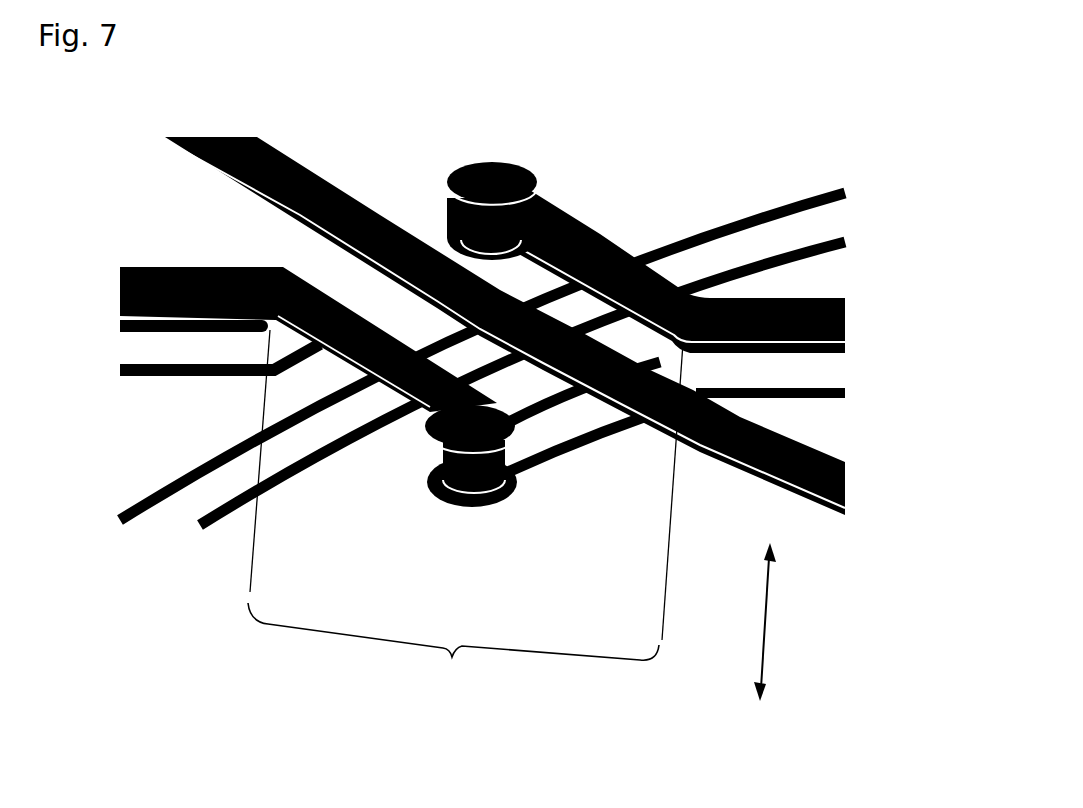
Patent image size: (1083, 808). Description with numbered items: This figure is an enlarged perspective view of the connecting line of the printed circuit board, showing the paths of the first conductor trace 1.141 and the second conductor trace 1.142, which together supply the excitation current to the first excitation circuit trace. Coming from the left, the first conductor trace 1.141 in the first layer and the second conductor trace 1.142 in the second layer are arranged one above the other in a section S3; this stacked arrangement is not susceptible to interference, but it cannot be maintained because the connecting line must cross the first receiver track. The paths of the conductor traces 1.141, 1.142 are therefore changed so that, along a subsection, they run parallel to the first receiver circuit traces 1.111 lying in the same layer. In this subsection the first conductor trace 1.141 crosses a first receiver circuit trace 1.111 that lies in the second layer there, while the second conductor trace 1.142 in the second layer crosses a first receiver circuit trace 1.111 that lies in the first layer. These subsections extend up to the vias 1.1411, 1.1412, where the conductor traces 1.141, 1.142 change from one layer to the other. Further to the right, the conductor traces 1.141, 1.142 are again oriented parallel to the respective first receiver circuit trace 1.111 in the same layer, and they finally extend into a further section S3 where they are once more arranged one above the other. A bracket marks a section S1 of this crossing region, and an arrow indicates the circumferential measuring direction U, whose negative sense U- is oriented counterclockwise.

The first receiver circuit trace 1.111 is at (246, 190).
The first conductor trace 1.141 is at (172, 267).
The second conductor trace 1.142 is at (600, 237).
The via 1.1411 is at (440, 487).
The via 1.1412 is at (462, 166).
The section S1 is at (465, 514).
The section S3 is at (482, 336).
The measuring direction U is at (758, 625).
The negative measuring direction U- is at (763, 539).